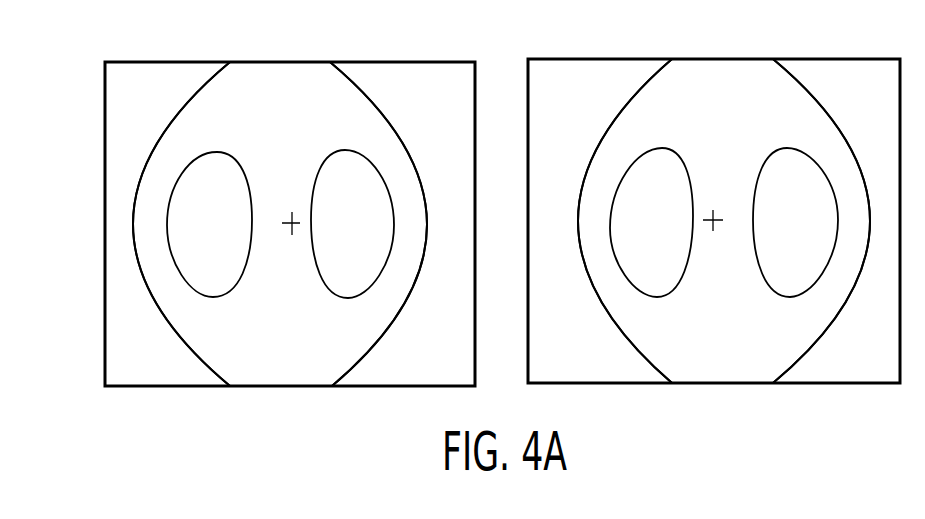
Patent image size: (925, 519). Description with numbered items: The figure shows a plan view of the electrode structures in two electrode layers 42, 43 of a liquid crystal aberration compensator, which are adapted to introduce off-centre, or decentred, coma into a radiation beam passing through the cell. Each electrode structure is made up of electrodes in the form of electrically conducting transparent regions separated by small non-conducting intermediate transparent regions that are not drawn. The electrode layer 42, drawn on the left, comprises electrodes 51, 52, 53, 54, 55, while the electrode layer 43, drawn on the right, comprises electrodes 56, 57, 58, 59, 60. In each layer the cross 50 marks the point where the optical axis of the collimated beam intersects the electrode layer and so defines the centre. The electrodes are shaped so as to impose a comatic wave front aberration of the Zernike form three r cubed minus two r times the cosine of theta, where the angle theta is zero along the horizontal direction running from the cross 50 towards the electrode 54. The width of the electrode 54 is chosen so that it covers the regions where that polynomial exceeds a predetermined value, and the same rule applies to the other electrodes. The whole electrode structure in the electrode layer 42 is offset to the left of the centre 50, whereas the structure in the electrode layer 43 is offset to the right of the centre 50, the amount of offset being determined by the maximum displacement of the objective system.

The electrode layer 42 is at (160, 61).
The electrode layer 43 is at (843, 58).
The cross 50 is at (293, 226).
The electrode 51 is at (181, 224).
The electrode 52 is at (280, 224).
The electrode 53 is at (385, 224).
The electrode 54 is at (209, 224).
The electrode 55 is at (352, 224).
The electrode 56 is at (613, 221).
The electrode 57 is at (724, 221).
The electrode 58 is at (824, 221).
The electrode 59 is at (651, 222).
The electrode 60 is at (795, 222).